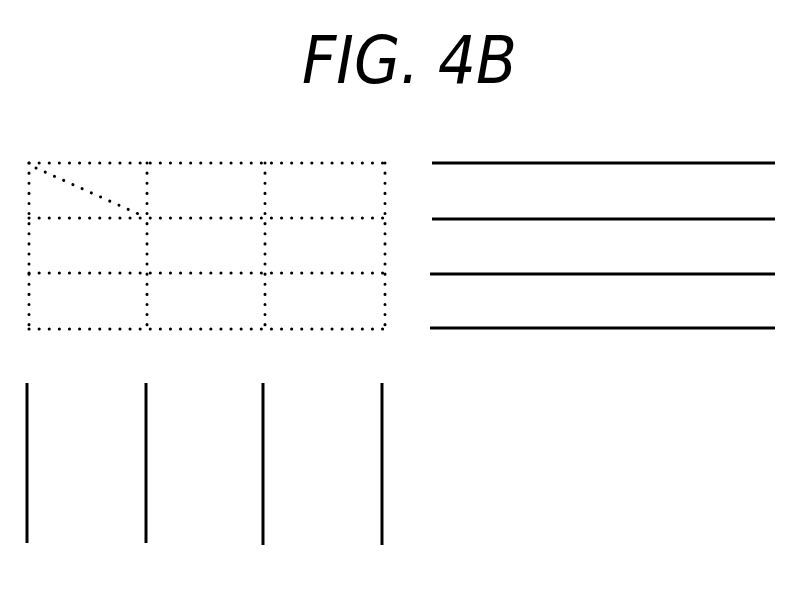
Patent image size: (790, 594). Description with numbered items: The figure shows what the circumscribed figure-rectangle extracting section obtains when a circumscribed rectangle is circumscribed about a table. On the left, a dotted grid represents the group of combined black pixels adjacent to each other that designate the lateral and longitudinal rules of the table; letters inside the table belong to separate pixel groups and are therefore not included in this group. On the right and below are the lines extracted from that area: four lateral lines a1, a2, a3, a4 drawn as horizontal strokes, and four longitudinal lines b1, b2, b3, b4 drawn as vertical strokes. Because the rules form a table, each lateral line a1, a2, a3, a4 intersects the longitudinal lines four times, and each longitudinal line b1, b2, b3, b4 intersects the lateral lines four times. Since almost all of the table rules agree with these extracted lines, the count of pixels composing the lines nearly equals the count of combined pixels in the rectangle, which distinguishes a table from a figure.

The lateral line a1 is at (650, 163).
The lateral line a2 is at (650, 219).
The lateral line a3 is at (648, 274).
The lateral line a4 is at (648, 328).
The longitudinal line b1 is at (27, 500).
The longitudinal line b2 is at (146, 503).
The longitudinal line b3 is at (263, 505).
The longitudinal line b4 is at (382, 505).